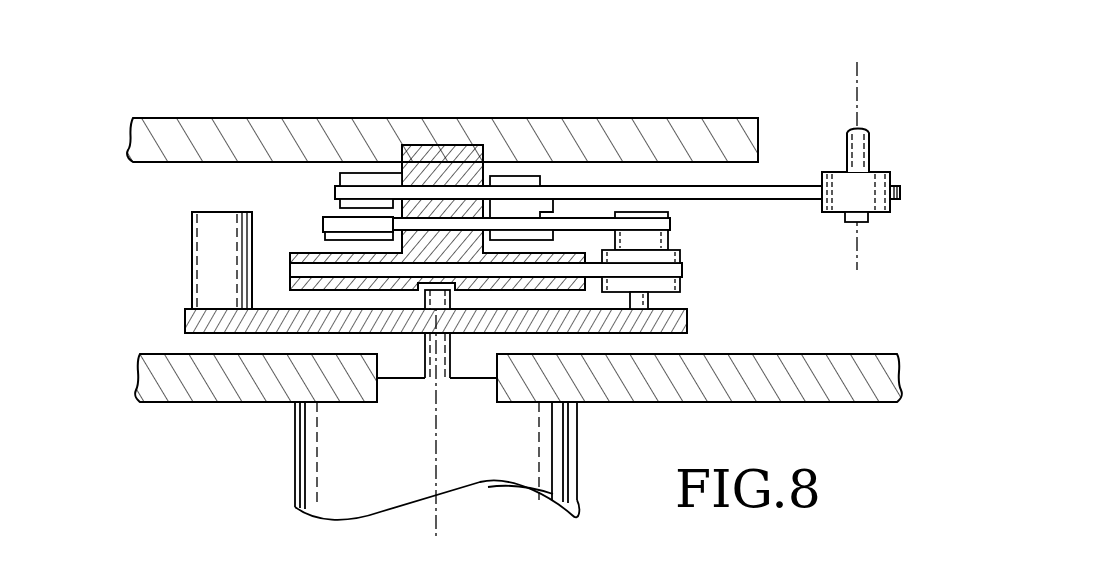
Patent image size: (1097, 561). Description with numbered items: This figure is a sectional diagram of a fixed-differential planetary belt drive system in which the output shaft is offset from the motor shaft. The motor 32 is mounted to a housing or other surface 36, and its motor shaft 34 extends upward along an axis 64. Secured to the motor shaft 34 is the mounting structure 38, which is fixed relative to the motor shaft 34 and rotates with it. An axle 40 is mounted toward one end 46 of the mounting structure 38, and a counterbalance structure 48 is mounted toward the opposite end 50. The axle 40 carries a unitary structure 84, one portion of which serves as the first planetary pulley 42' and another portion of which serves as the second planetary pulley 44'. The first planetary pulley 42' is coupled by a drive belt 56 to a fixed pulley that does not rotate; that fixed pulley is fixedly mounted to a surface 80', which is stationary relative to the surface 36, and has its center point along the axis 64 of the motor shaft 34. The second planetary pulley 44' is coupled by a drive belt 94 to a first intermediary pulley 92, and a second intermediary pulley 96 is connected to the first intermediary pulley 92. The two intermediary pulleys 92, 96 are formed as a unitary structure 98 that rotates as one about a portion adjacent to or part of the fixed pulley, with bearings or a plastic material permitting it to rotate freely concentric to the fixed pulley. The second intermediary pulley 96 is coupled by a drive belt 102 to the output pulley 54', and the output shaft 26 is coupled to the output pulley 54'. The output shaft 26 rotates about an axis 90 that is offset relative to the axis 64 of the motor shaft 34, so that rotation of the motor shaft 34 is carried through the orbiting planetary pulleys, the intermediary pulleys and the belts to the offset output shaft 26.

The surface 80' is at (442, 113).
The second intermediary pulley 96 is at (338, 176).
The first intermediary pulley 92 is at (338, 208).
The drive belt 94 is at (322, 225).
The unitary structure 98 is at (298, 207).
The drive belt 102 is at (788, 186).
The axis 90 is at (857, 105).
The output shaft 26 is at (870, 148).
The output pulley 54' is at (889, 181).
The counterbalance structure 48 is at (192, 255).
The opposite end 50 is at (185, 311).
The end 46 is at (687, 330).
The second planetary pulley 44' is at (682, 225).
The unitary structure 84 is at (712, 239).
The drive belt 56 is at (683, 268).
The first planetary pulley 42' is at (535, 278).
The axle 40 is at (648, 302).
The mounting structure 38 is at (520, 333).
The motor shaft 34 is at (425, 357).
The axis 64 is at (438, 463).
The surface 36 is at (823, 355).
The motor 32 is at (295, 440).